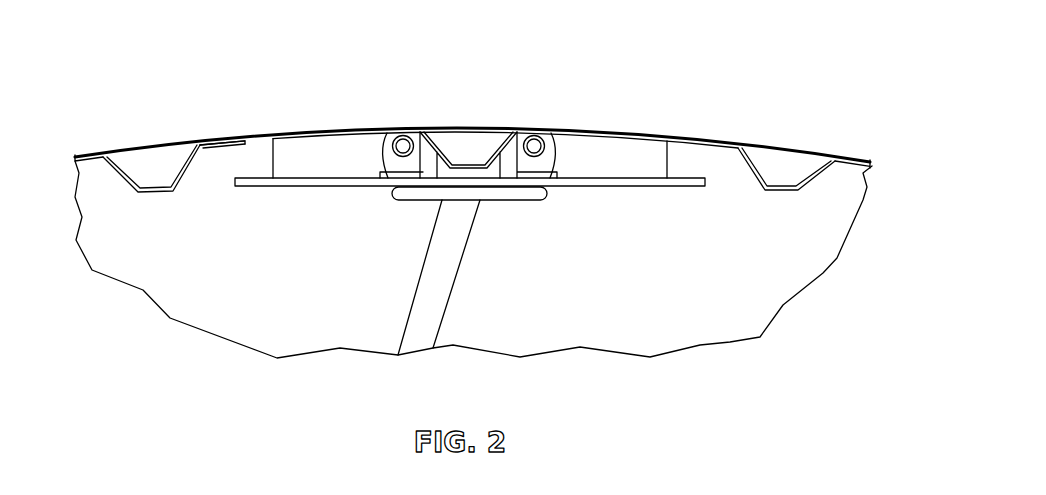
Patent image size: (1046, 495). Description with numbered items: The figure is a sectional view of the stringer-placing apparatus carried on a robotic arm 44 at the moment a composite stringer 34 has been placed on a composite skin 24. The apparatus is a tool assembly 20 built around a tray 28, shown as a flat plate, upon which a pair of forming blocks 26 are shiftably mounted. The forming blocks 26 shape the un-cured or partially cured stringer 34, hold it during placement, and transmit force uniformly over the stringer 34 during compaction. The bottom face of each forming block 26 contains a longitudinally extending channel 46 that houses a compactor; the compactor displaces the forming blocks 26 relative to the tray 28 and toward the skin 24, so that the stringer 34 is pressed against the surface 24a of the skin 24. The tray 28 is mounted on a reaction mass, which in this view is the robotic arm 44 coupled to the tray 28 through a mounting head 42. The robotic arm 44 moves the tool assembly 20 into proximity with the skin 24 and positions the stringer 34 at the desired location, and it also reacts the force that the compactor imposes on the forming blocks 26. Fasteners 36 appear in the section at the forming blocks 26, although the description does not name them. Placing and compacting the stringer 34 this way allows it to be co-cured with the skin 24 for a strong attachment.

The tool assembly 20 is at (597, 200).
The composite skin 24 is at (165, 144).
The surface 24a is at (258, 145).
The forming blocks 26 is at (335, 153).
The tray 28 is at (303, 180).
The composite stringer 34 is at (124, 188).
The fastener 36 is at (405, 133).
The mounting head 42 is at (413, 190).
The robotic arm 44 is at (432, 312).
The longitudinally extending channel 46 is at (386, 131).